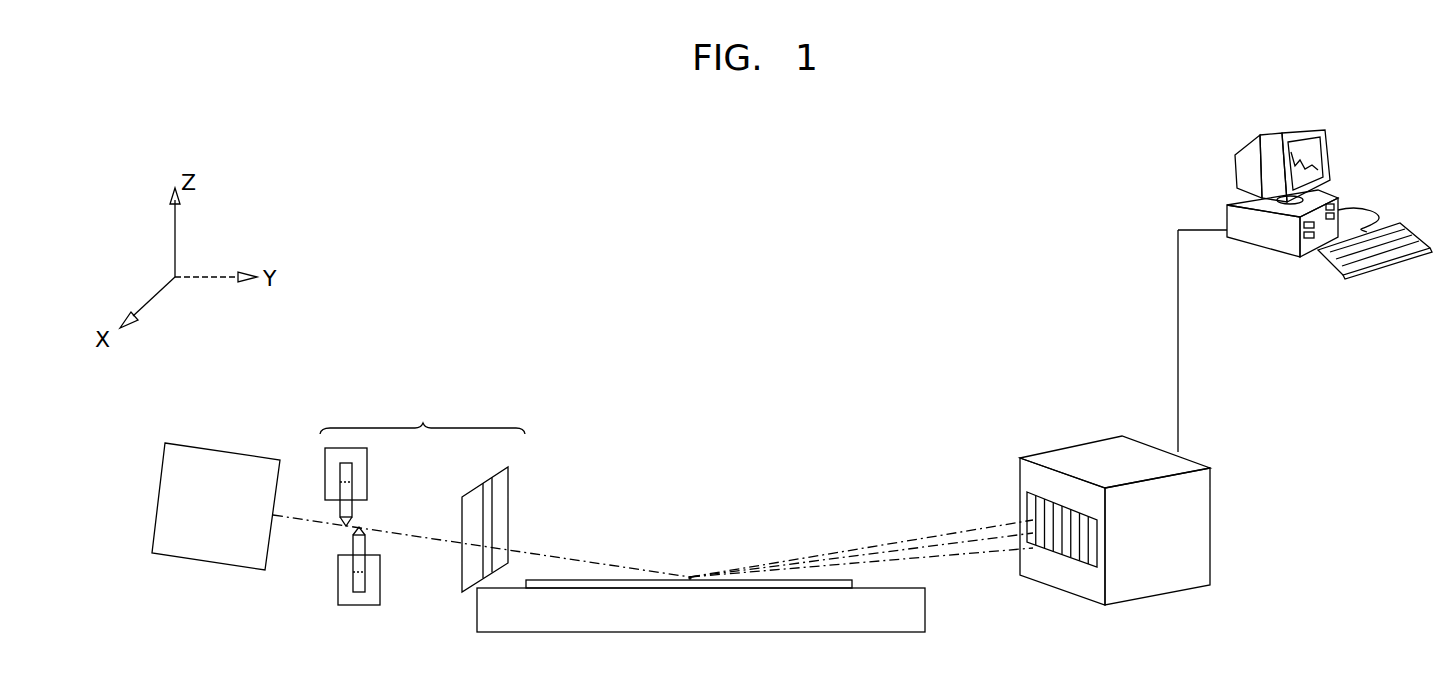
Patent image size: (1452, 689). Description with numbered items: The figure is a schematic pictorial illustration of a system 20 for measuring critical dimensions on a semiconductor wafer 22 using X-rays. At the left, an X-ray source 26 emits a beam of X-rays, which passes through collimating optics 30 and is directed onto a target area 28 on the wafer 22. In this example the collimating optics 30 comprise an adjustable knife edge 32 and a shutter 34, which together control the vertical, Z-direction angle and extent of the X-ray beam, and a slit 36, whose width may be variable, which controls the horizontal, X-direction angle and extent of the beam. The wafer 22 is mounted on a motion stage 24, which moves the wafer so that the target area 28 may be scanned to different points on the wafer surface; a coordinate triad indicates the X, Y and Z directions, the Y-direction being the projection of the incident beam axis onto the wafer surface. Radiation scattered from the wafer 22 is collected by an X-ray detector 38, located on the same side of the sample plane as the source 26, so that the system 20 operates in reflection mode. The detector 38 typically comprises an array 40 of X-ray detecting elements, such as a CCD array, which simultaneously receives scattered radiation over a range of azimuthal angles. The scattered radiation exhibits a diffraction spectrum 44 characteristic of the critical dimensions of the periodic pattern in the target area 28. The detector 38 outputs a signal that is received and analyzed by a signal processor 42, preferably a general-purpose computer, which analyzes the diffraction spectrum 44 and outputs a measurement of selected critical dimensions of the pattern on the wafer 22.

The system 20 is at (438, 316).
The semiconductor wafer 22 is at (840, 580).
The motion stage 24 is at (925, 607).
The X-ray source 26 is at (229, 450).
The target area 28 is at (683, 581).
The collimating optics 30 is at (422, 415).
The adjustable knife edge 32 is at (368, 462).
The shutter 34 is at (338, 593).
The slit 36 is at (504, 496).
The X-ray detector 38 is at (1132, 594).
The array 40 is at (1073, 563).
The signal processor 42 is at (1232, 198).
The diffraction spectrum 44 is at (1293, 150).